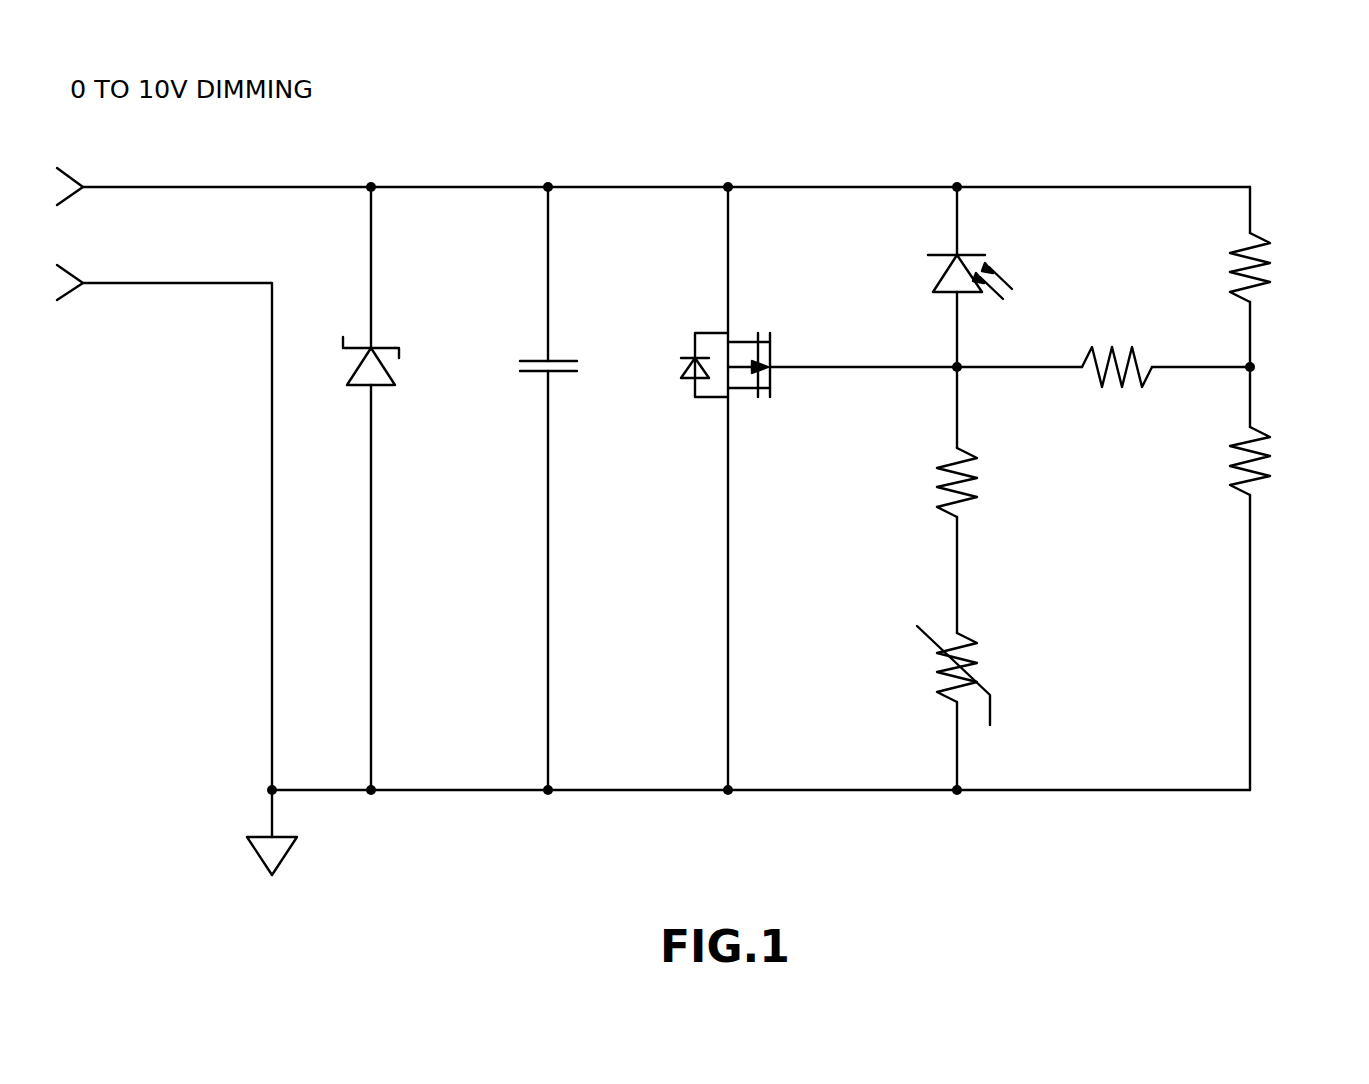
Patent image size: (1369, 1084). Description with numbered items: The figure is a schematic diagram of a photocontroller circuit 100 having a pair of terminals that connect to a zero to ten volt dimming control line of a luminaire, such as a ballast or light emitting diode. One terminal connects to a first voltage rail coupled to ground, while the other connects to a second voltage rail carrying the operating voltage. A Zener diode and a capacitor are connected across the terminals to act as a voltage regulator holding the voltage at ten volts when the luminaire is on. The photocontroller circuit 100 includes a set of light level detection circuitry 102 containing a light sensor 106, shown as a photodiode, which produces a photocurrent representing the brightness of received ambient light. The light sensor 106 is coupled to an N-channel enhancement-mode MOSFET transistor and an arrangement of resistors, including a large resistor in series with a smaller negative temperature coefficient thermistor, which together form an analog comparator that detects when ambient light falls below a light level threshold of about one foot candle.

The photocontroller circuit 100 is at (951, 87).
The light level detection circuitry 102 is at (1263, 843).
The light sensor 106 is at (975, 255).